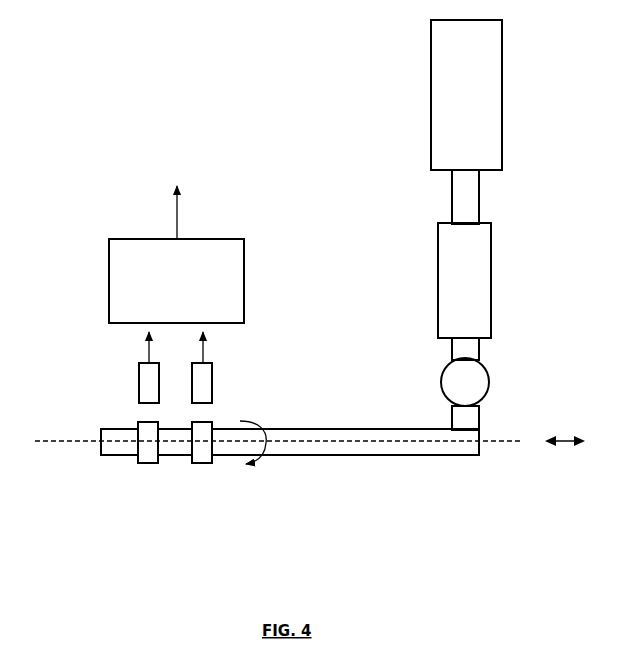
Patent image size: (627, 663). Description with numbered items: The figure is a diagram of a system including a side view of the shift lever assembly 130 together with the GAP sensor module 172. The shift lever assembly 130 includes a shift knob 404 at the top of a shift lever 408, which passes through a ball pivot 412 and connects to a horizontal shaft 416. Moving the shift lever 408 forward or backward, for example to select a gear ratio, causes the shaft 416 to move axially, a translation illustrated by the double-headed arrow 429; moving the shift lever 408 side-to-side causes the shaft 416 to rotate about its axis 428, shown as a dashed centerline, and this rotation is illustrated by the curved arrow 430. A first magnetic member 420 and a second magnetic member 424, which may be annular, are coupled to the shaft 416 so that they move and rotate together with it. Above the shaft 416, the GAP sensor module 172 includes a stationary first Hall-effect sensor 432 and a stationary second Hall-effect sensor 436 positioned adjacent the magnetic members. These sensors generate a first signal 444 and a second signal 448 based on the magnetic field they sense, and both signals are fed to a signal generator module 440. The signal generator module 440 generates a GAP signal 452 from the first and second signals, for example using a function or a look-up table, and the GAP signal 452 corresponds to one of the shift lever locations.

The GAP sensor module 172 is at (128, 106).
The shift lever assembly 130 is at (97, 532).
The shift knob 404 is at (431, 95).
The shift lever 408 is at (452, 197).
The ball pivot 412 is at (490, 383).
The shaft 416 is at (110, 456).
The first magnetic member 420 is at (202, 464).
The second magnetic member 424 is at (148, 464).
The axis 428 is at (497, 442).
The arrow 429 is at (567, 443).
The arrow 430 is at (256, 424).
The first Hall-effect sensor 432 is at (212, 380).
The second Hall-effect sensor 436 is at (139, 378).
The signal generator module 440 is at (244, 280).
The first signal 444 is at (203, 344).
The second signal 448 is at (149, 344).
The GAP signal 452 is at (177, 216).